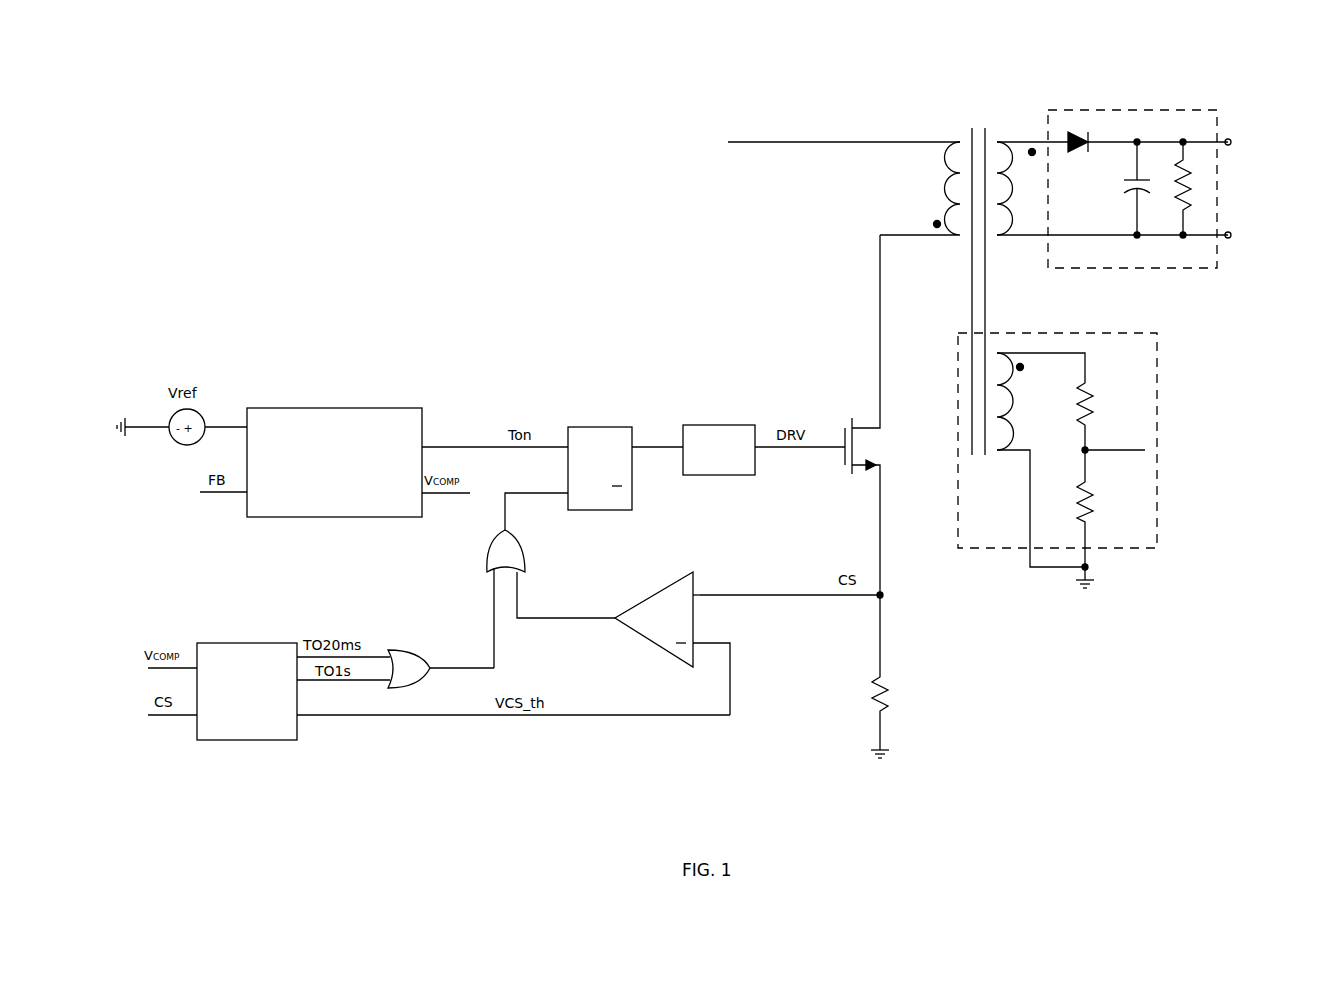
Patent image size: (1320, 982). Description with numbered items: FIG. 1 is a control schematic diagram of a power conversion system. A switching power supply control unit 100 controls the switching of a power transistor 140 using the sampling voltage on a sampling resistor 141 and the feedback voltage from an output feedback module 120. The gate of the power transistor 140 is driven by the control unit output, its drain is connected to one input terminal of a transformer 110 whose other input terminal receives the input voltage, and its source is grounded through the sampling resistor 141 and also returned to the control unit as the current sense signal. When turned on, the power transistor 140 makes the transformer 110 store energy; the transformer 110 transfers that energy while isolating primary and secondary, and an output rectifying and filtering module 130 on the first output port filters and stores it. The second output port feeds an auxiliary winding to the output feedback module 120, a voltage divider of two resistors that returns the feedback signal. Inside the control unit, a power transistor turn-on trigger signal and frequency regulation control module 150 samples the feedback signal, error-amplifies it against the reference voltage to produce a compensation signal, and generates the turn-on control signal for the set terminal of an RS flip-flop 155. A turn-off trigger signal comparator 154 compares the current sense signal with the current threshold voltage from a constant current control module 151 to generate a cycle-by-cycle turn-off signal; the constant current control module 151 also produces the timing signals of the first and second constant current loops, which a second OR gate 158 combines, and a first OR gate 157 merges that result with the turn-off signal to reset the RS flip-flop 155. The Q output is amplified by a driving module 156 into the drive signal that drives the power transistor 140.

The switching power supply control unit 100 is at (420, 318).
The transformer 110 is at (975, 140).
The output feedback module 120 is at (1157, 392).
The output rectifying and filtering module 130 is at (1137, 110).
The power transistor 140 is at (893, 446).
The sampling resistor 141 is at (897, 688).
The power transistor turn-on trigger signal and frequency regulation control module 150 is at (328, 408).
The constant current control module 151 is at (243, 643).
The turn-off trigger signal comparator 154 is at (695, 571).
The RS flip-flop 155 is at (636, 430).
The driving module 156 is at (725, 425).
The first OR gate 157 is at (527, 560).
The second OR gate 158 is at (422, 652).